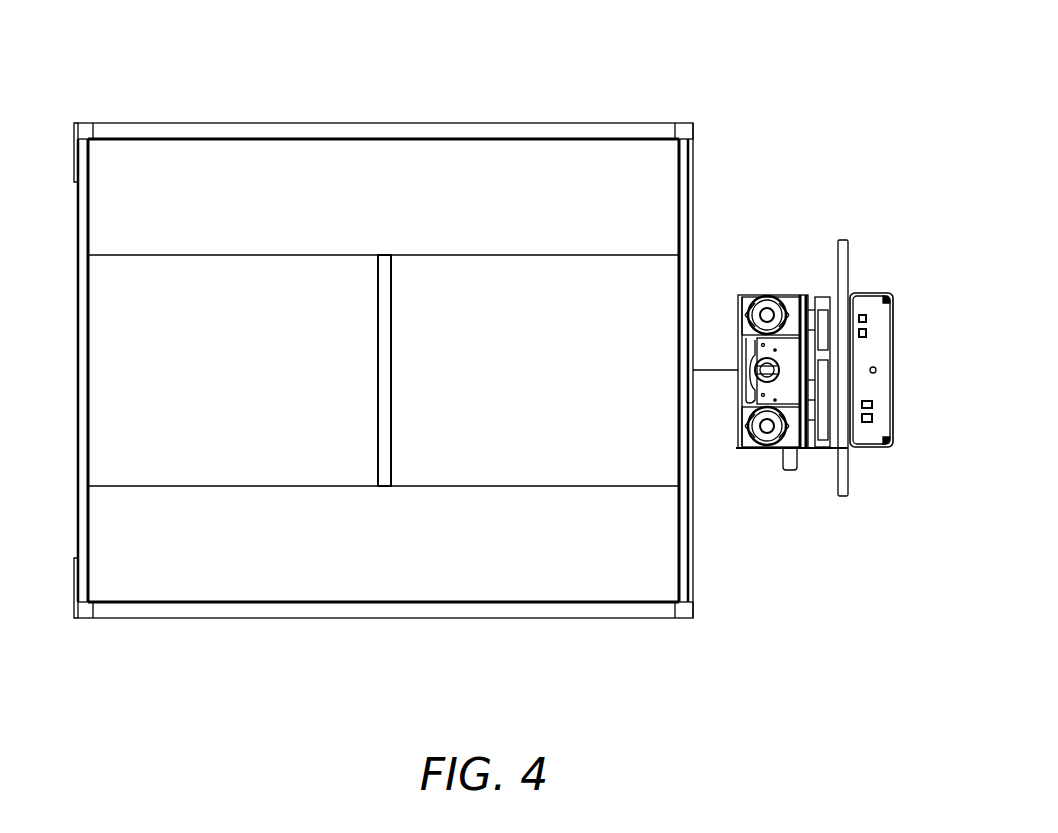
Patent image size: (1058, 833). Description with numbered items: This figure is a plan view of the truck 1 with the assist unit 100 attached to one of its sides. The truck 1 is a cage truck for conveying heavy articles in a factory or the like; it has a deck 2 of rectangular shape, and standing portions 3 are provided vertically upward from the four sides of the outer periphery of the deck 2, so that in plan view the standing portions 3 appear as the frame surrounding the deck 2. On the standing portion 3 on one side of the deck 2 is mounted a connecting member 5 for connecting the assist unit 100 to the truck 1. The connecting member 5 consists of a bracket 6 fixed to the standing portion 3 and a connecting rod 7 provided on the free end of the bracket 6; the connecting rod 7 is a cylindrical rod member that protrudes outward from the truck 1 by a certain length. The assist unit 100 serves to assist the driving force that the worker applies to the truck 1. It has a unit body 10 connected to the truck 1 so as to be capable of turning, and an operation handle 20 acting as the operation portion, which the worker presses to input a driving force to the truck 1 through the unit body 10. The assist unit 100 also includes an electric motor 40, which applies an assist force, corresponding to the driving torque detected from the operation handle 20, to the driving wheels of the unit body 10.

The truck 1 is at (431, 355).
The deck 2 is at (500, 200).
The standing portion 3 is at (322, 122).
The connecting member 5 is at (700, 111).
The bracket 6 is at (725, 368).
The connecting rod 7 is at (770, 356).
The unit body 10 is at (878, 355).
The operation handle 20 is at (843, 241).
The electric motor 40 is at (778, 296).
The assist unit 100 is at (865, 230).